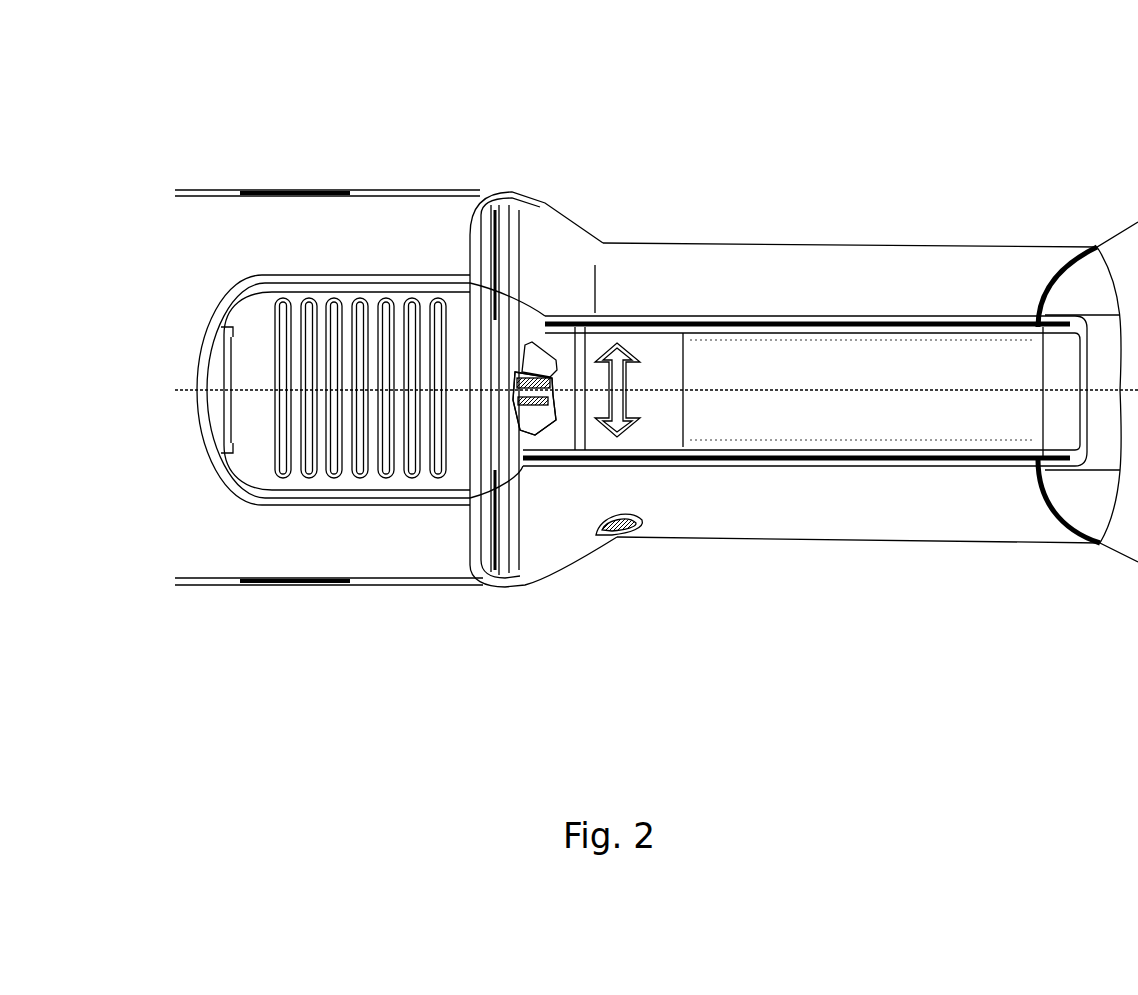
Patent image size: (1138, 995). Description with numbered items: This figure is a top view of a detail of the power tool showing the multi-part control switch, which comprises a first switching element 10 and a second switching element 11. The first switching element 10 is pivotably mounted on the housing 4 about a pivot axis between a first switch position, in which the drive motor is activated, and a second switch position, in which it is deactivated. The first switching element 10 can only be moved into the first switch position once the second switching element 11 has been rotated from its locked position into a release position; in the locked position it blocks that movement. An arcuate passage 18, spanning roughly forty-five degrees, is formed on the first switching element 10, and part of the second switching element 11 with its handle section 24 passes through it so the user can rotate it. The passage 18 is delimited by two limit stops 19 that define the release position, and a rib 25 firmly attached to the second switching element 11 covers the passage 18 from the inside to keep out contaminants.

The housing 4 is at (872, 268).
The first switching element 10 is at (880, 380).
The second switching element 11 is at (527, 390).
The handle section 24 is at (527, 390).
The arcuate passage 18 is at (533, 362).
The limit stops 19 is at (540, 352).
The rib 25 is at (543, 413).